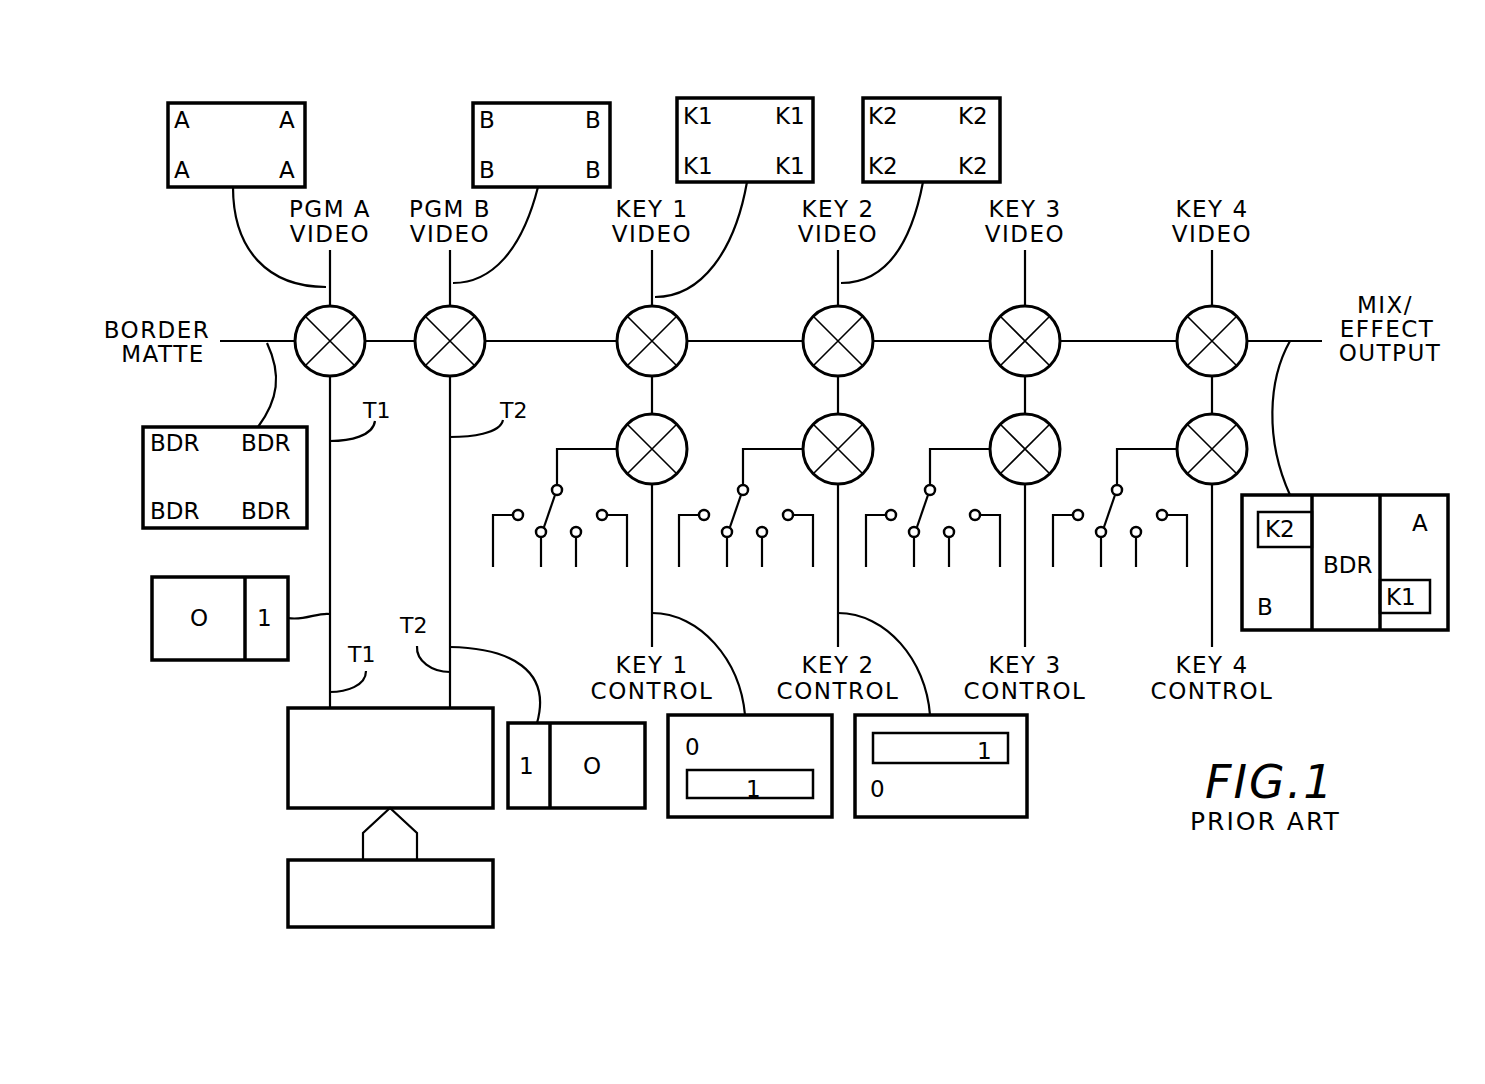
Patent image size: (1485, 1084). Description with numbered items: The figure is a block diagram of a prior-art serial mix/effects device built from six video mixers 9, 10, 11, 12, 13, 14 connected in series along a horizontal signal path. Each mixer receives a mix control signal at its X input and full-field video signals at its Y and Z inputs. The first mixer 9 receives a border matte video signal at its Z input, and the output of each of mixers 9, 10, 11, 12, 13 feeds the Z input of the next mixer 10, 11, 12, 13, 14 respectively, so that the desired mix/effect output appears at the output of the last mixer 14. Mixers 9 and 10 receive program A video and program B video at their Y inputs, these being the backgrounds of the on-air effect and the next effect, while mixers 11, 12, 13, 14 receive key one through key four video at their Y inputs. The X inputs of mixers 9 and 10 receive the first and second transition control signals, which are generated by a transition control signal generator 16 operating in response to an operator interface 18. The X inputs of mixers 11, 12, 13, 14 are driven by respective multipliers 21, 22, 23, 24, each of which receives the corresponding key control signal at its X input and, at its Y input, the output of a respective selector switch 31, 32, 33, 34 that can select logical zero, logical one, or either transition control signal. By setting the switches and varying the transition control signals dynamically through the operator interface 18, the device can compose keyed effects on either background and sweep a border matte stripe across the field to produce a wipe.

The video mixer 9 is at (354, 318).
The video mixer 10 is at (475, 318).
The video mixer 11 is at (685, 325).
The video mixer 12 is at (871, 325).
The video mixer 13 is at (1055, 322).
The video mixer 14 is at (1268, 289).
The transition control signal generator 16 is at (288, 770).
The operator interface 18 is at (493, 905).
The multiplier 21 is at (622, 428).
The multiplier 22 is at (806, 428).
The multiplier 23 is at (992, 428).
The multiplier 24 is at (1183, 427).
The selector switch 31 is at (550, 500).
The selector switch 32 is at (740, 497).
The selector switch 33 is at (928, 497).
The selector switch 34 is at (1108, 498).